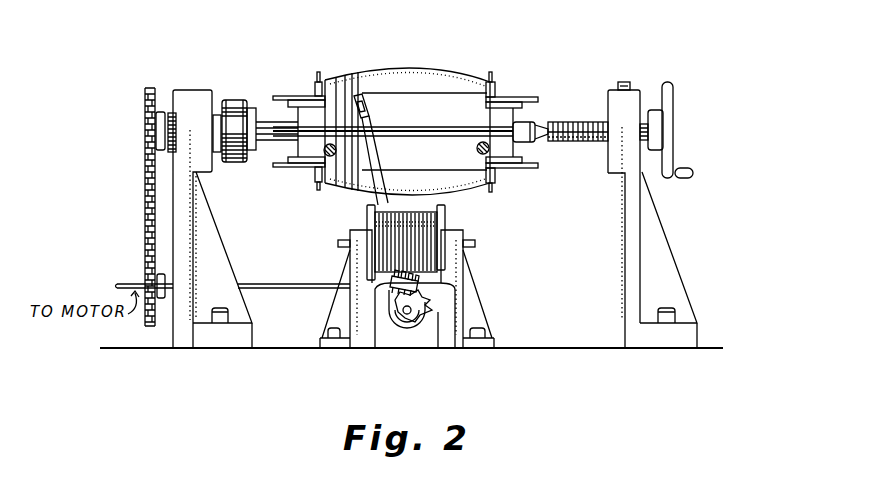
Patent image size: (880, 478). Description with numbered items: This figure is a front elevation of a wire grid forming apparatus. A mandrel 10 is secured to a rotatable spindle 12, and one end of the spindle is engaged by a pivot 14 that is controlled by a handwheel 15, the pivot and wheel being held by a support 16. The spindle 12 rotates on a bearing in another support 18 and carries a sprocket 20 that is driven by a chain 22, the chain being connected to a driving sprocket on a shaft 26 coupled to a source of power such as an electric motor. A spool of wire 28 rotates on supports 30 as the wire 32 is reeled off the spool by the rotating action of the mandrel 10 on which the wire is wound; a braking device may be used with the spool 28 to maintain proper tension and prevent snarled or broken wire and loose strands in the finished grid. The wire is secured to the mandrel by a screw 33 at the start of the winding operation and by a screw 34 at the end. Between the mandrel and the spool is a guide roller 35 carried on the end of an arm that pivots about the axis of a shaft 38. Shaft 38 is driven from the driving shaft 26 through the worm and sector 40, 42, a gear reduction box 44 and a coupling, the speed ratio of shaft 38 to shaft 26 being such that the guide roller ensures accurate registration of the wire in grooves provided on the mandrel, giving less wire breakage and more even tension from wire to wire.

The mandrel 10 is at (462, 68).
The rotatable spindle 12 is at (265, 121).
The pivot 14 is at (546, 127).
The handwheel 15 is at (668, 115).
The support 16 is at (632, 95).
The support 18 is at (190, 100).
The sprocket 20 is at (160, 112).
The chain 22 is at (145, 192).
The shaft 26 is at (128, 283).
The spool of wire 28 is at (446, 218).
The supports 30 is at (350, 257).
The wire 32 is at (354, 80).
The screw 33 is at (324, 150).
The screw 34 is at (489, 148).
The guide roller 35 is at (366, 106).
The shaft 38 is at (407, 316).
The worm 40 is at (420, 285).
The sector 42 is at (421, 305).
The gear reduction box 44 is at (385, 335).